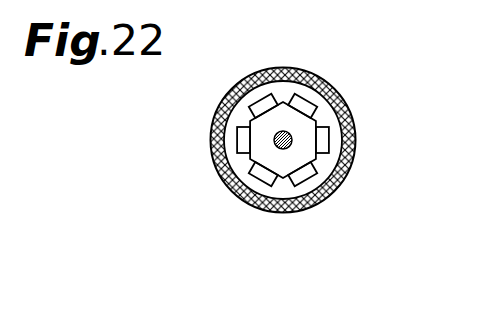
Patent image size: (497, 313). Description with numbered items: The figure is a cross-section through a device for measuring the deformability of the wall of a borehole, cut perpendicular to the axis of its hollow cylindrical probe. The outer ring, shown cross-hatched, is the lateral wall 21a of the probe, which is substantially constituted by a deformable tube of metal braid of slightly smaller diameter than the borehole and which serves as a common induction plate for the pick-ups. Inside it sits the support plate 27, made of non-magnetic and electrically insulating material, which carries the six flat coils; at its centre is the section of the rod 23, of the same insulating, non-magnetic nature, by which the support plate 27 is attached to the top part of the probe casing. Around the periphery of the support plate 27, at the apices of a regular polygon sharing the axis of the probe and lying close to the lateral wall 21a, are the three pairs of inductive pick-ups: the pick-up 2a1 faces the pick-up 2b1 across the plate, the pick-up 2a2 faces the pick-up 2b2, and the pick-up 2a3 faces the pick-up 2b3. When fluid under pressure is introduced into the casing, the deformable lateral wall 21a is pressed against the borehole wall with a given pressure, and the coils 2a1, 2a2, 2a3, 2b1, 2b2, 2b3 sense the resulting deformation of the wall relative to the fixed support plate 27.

The lateral wall 21a is at (349, 112).
The rod 23 is at (283, 131).
The support plate 27 is at (283, 178).
The inductive pick-up 2a1 is at (316, 142).
The inductive pick-up 2a2 is at (324, 184).
The inductive pick-up 2a3 is at (262, 181).
The inductive pick-up 2b1 is at (250, 143).
The inductive pick-up 2b2 is at (226, 93).
The inductive pick-up 2b3 is at (334, 96).